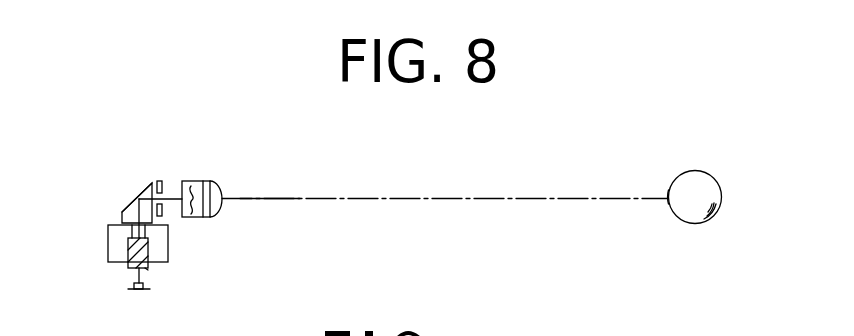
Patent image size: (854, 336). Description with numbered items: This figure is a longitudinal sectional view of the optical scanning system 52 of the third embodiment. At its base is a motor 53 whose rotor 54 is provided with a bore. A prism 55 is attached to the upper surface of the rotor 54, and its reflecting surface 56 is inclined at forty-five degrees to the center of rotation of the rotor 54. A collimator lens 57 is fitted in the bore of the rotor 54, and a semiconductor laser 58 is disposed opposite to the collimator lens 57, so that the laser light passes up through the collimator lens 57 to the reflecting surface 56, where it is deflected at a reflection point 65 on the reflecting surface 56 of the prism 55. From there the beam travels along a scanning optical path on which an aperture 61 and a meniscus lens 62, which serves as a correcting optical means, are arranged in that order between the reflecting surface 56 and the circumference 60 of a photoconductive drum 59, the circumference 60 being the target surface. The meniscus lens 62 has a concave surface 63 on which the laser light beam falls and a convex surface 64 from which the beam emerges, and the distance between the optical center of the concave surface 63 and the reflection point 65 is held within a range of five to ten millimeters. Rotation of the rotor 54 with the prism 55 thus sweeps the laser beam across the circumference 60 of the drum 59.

The optical scanning system 52 is at (250, 185).
The motor 53 is at (104, 253).
The rotor 54 is at (148, 264).
The prism 55 is at (148, 190).
The reflecting surface 56 is at (127, 210).
The collimator lens 57 is at (148, 270).
The semiconductor laser 58 is at (139, 289).
The photoconductive drum 59 is at (700, 171).
The circumference 60 is at (668, 193).
The aperture 61 is at (169, 173).
The meniscus lens 62 is at (209, 181).
The concave surface 63 is at (204, 217).
The convex surface 64 is at (221, 204).
The reflection point 65 is at (141, 197).